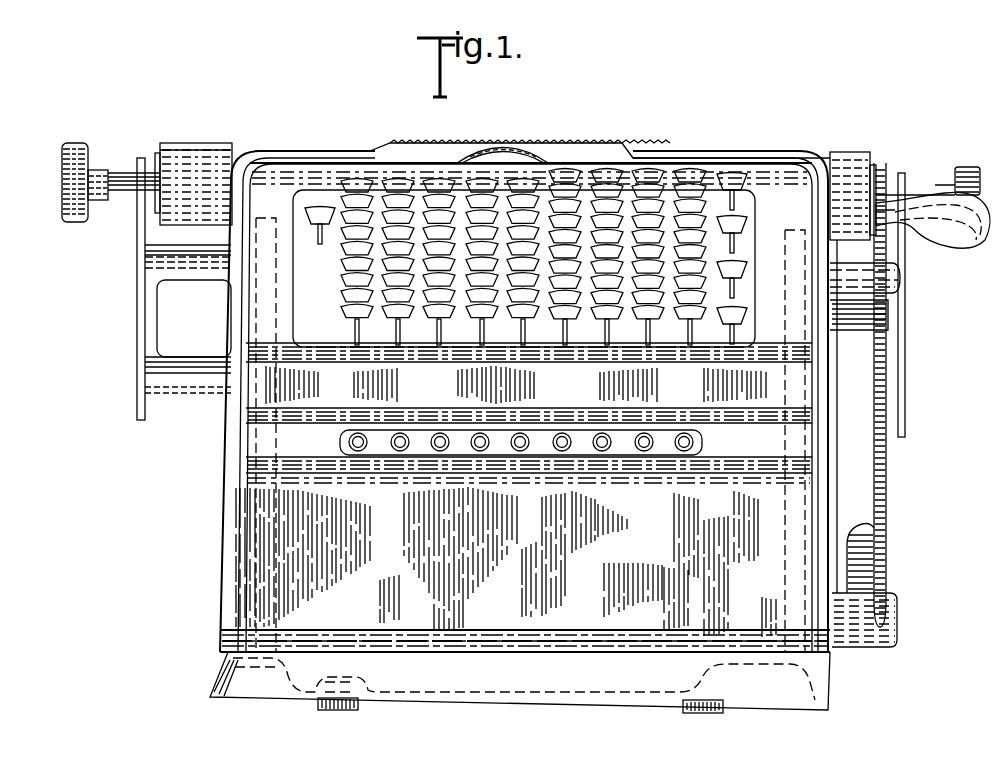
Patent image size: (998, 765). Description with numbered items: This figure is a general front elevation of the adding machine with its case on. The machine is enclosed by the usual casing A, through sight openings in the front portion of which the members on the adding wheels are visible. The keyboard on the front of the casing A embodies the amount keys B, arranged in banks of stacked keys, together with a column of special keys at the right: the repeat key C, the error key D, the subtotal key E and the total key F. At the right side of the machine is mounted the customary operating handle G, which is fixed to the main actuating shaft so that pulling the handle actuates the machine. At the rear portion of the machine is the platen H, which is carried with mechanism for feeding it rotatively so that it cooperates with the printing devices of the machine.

The casing A is at (262, 496).
The amount keys B is at (610, 203).
The repeat key C is at (738, 177).
The error key D is at (738, 228).
The subtotal key E is at (738, 272).
The total key F is at (738, 320).
The operating handle G is at (880, 492).
The platen H is at (847, 177).